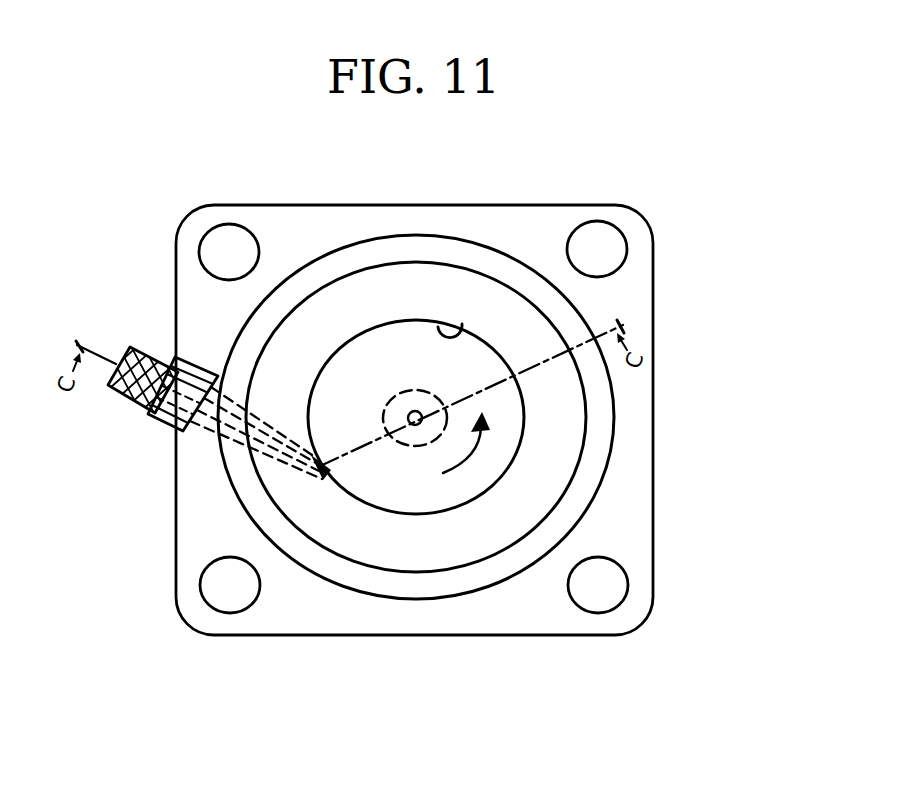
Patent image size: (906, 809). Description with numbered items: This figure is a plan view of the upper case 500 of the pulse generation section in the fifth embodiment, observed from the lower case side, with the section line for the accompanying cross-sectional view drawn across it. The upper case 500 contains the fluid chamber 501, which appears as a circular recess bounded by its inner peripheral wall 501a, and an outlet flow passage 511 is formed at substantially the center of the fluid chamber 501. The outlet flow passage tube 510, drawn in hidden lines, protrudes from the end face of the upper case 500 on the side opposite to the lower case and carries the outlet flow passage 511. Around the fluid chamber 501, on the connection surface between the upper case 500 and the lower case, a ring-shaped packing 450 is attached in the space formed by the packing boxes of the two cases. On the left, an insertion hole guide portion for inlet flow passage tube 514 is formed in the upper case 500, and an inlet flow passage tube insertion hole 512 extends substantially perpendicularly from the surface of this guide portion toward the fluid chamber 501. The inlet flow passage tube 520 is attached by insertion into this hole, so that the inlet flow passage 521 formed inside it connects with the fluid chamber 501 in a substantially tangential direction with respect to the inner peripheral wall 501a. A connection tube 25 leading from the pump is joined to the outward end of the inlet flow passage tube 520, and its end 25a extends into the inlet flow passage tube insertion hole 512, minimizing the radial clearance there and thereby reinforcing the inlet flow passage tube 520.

The connection tube 25 is at (125, 397).
The end of connection tube 25a is at (205, 436).
The ring-shaped packing 450 is at (603, 423).
The upper case 500 is at (655, 497).
The fluid chamber 501 is at (393, 391).
The inner peripheral wall of fluid chamber 501a is at (462, 330).
The outlet flow passage tube 510 is at (402, 443).
The outlet flow passage 511 is at (413, 426).
The inlet flow passage tube insertion hole 512 is at (264, 412).
The insertion hole guide portion for inlet flow passage tube 514 is at (176, 362).
The inlet flow passage tube 520 is at (253, 440).
The inlet flow passage 521 is at (287, 462).